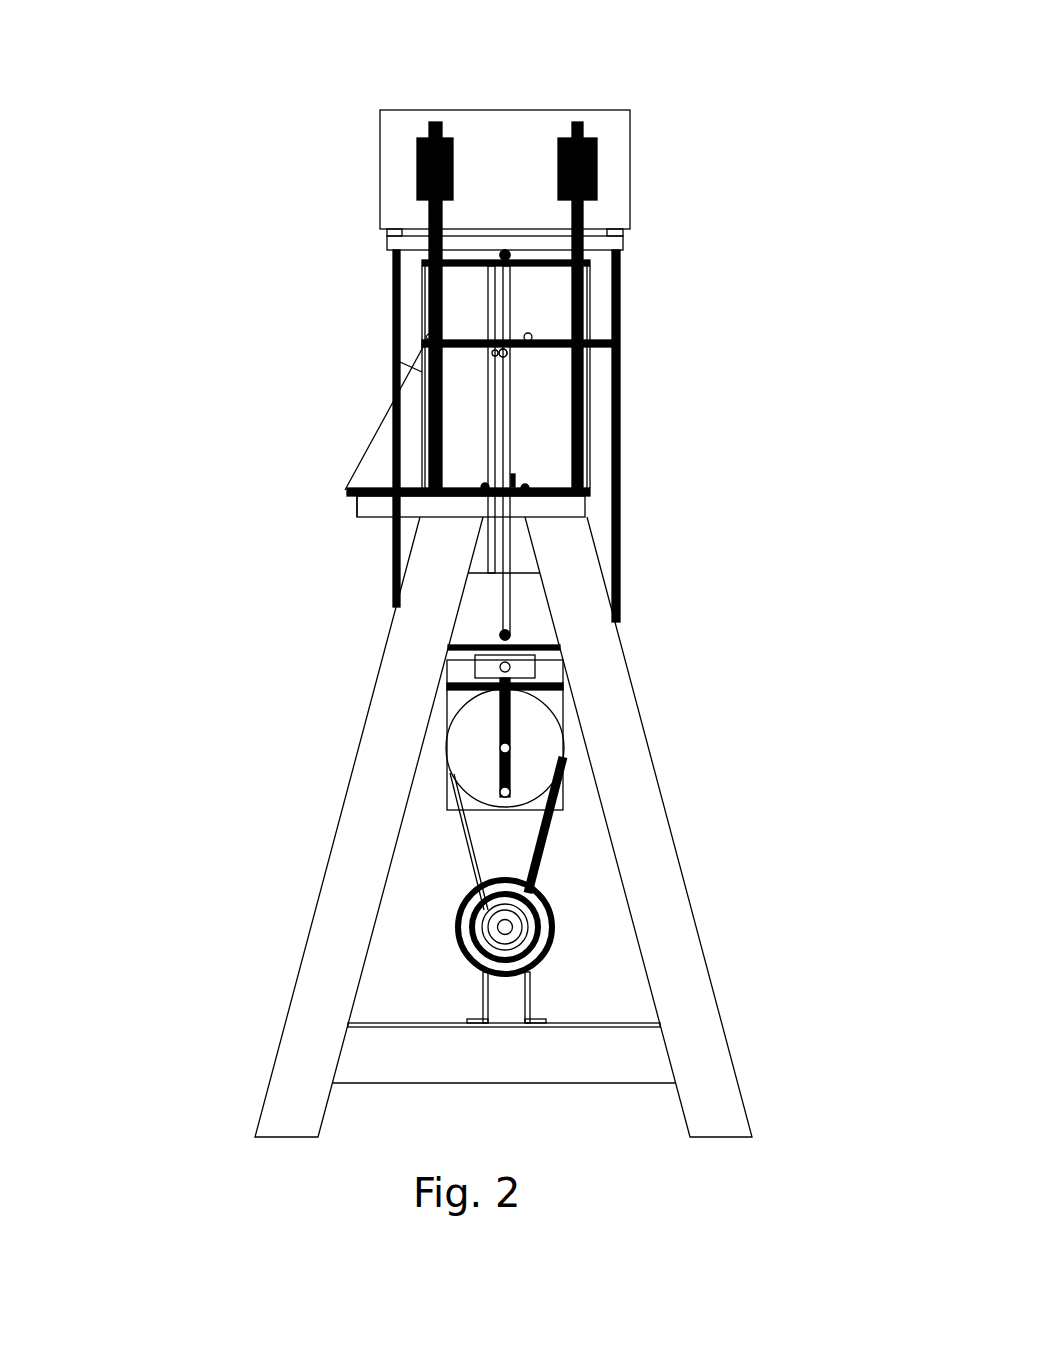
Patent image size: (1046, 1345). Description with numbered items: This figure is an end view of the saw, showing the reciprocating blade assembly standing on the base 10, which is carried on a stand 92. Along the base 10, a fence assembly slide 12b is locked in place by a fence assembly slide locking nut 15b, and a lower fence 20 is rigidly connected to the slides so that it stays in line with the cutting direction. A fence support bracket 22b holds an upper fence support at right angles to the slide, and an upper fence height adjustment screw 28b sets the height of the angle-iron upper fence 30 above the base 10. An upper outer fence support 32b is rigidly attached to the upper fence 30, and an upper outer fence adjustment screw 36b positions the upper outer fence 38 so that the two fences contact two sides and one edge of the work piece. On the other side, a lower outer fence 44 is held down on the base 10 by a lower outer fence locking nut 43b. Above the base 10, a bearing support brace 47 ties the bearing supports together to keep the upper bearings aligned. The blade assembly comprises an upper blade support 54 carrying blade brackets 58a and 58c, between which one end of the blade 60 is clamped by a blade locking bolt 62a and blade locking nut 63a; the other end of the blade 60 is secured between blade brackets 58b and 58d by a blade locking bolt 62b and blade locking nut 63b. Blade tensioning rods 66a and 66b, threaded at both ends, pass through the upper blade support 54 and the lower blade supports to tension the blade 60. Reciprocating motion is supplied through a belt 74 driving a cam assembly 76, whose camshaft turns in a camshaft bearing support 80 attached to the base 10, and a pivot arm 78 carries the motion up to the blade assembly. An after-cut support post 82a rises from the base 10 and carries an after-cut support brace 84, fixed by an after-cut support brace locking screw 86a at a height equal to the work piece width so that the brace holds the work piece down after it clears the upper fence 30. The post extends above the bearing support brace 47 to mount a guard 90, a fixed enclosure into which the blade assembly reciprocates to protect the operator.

The base 10 is at (353, 513).
The fence assembly slide 12b is at (357, 498).
The fence assembly slide locking nut 15b is at (470, 485).
The lower fence 20 is at (485, 487).
The fence support bracket 22b is at (362, 457).
The upper fence height adjustment screw 28b is at (428, 327).
The upper fence 30 is at (512, 353).
The upper outer fence support 32b is at (620, 343).
The upper outer fence adjustment screw 36b is at (528, 337).
The upper outer fence 38 is at (512, 357).
The lower outer fence locking nut 43b is at (525, 488).
The lower outer fence 44 is at (513, 478).
The bearing support brace 47 is at (565, 258).
The upper blade support 54 is at (625, 240).
The blade bracket 58a is at (428, 215).
The blade bracket 58b is at (480, 640).
The blade bracket 58c is at (510, 255).
The blade bracket 58d is at (513, 642).
The blade 60 is at (507, 445).
The blade locking bolt 62a is at (508, 252).
The blade locking bolt 62b is at (510, 637).
The blade locking nut 63a is at (502, 252).
The blade locking nut 63b is at (505, 633).
The blade tensioning rod 66a is at (393, 268).
The blade tensioning rod 66b is at (620, 277).
The belt 74 is at (466, 848).
The cam assembly 76 is at (483, 786).
The pivot arm 78 is at (500, 775).
The camshaft bearing support 80 is at (563, 700).
The after-cut support post 82a is at (400, 362).
The after-cut support brace 84 is at (428, 338).
The after-cut support brace locking screw 86a is at (490, 353).
The guard 90 is at (400, 110).
The stand 92 is at (313, 920).